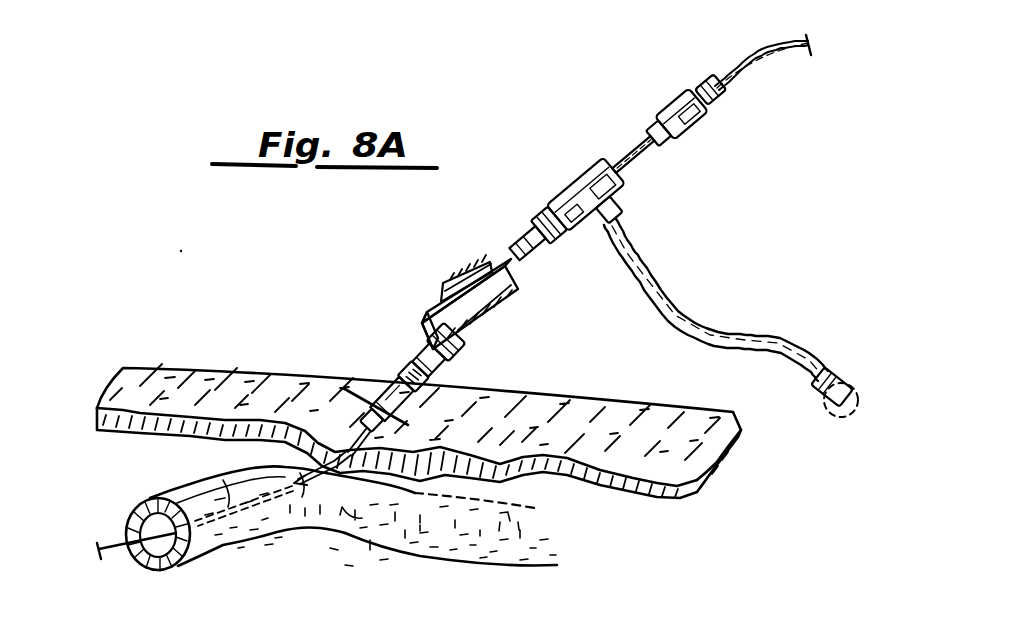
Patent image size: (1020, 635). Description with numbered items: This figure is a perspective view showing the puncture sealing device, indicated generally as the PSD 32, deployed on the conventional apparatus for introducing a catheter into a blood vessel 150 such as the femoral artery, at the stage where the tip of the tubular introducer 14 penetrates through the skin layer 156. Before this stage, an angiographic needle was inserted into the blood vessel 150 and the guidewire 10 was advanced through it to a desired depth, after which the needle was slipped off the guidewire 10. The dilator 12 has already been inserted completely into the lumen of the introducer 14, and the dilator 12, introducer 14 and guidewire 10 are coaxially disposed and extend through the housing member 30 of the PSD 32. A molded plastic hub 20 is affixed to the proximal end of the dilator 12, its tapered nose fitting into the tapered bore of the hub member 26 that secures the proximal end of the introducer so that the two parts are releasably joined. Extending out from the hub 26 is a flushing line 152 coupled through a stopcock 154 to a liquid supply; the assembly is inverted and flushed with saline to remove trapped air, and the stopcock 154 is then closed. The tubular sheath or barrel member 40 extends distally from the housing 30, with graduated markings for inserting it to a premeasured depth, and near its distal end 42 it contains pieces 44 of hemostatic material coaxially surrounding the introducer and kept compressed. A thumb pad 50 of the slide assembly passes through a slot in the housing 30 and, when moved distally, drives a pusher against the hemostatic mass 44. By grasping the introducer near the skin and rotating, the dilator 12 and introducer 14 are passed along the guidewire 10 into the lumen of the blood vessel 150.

The guidewire 10 is at (756, 52).
The dilator 12 is at (206, 481).
The tapered distal end of the dilator (tubular introducer) 14 is at (313, 470).
The molded plastic hub 20 is at (670, 97).
The hub member 26 is at (567, 186).
The housing member 30 is at (498, 294).
The puncture sealing device (PSD) 32 is at (428, 305).
The tubular sheath or barrel member 40 is at (403, 380).
The distal end of the sheath 42 is at (377, 420).
The hemostatic material pieces (mass) 44 is at (357, 400).
The thumb pad 50 is at (480, 262).
The blood vessel 150 is at (403, 525).
The flushing line 152 is at (641, 270).
The stopcock 154 is at (858, 382).
The skin layer 156 is at (538, 440).